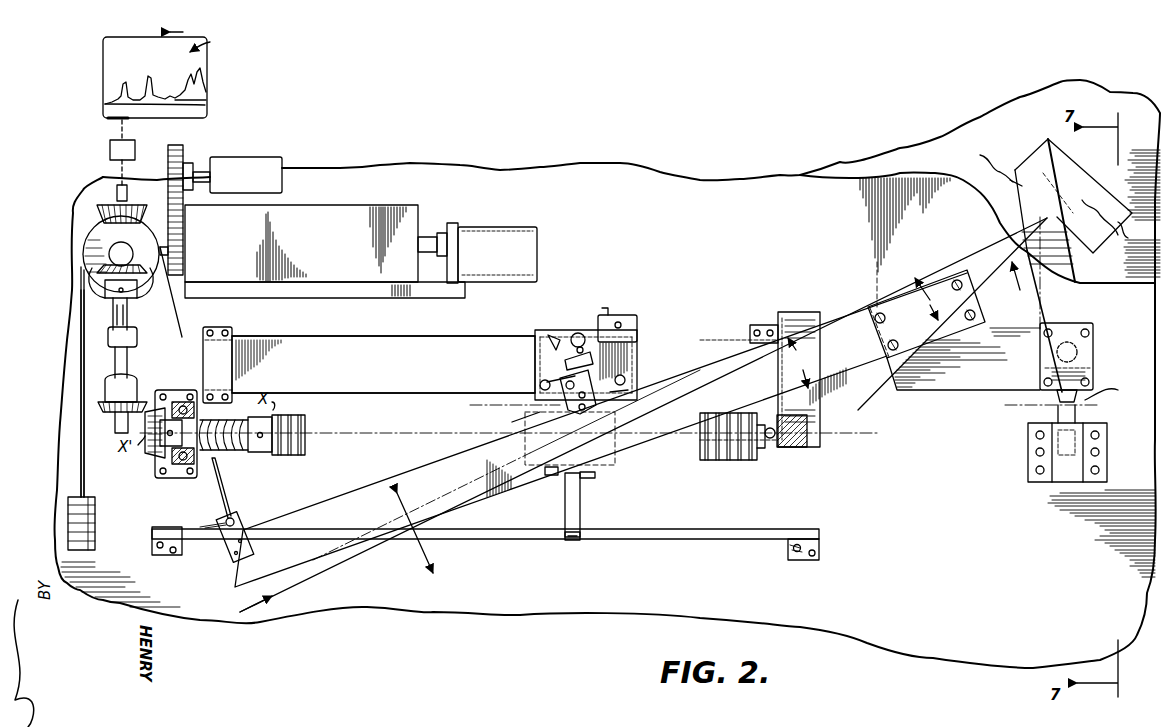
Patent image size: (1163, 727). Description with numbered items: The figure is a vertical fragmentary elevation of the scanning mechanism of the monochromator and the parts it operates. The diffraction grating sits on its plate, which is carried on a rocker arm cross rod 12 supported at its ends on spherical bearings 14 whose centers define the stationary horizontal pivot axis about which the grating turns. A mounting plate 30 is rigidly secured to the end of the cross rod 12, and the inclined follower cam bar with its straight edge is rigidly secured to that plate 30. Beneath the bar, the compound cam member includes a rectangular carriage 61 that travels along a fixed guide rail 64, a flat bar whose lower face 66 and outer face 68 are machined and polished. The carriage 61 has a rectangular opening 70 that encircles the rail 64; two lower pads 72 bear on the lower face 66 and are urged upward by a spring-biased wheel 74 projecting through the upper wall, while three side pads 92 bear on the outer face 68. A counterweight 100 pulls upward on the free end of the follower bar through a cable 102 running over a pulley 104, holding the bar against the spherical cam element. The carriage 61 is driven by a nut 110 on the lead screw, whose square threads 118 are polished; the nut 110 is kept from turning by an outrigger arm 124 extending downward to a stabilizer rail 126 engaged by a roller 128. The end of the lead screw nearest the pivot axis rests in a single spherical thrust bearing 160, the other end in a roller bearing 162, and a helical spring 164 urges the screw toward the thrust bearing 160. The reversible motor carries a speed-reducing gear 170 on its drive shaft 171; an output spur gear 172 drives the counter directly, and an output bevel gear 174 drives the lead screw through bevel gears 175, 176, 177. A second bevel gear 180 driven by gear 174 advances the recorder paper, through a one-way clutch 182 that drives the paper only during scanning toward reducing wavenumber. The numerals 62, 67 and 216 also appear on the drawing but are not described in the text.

The rocker arm cross rod 12 is at (1077, 358).
The spherical bearings 14 is at (1052, 170).
The mounting plate 30 is at (960, 388).
The carriage 61 is at (538, 328).
The block portion 62 is at (625, 345).
The guide rail 64 is at (333, 348).
The lower face of guide rail 66 is at (375, 390).
The bar upper edge 67 is at (422, 341).
The outer face of guide rail 68 is at (383, 368).
The rectangular opening 70 is at (556, 328).
The lower pads 72 is at (628, 390).
The spring-biased wheel 74 is at (595, 320).
The side pads 92 is at (578, 333).
The counterweight 100 is at (95, 530).
The cable 102 is at (81, 443).
The pulley 104 is at (95, 250).
The nut 110 is at (608, 478).
The threads of lead screw 118 is at (286, 455).
The outrigger arm 124 is at (566, 505).
The stabilizer rail 126 is at (720, 530).
The roller 128 is at (571, 541).
The spherical thrust bearing 160 is at (770, 450).
The roller bearing 162 is at (182, 466).
The helical spring 164 is at (222, 415).
The speed-reducing gear 170 is at (400, 194).
The drive shaft 171 is at (444, 234).
The output spur gear 172 is at (183, 240).
The output bevel gear 174 is at (176, 256).
The bevel gear 175 is at (85, 282).
The bevel gear 176 is at (105, 402).
The bevel gear 177 is at (155, 395).
The second driven bevel gear 180 is at (97, 212).
The one-way-operating clutch 182 is at (110, 150).
The slit 216 is at (1075, 378).